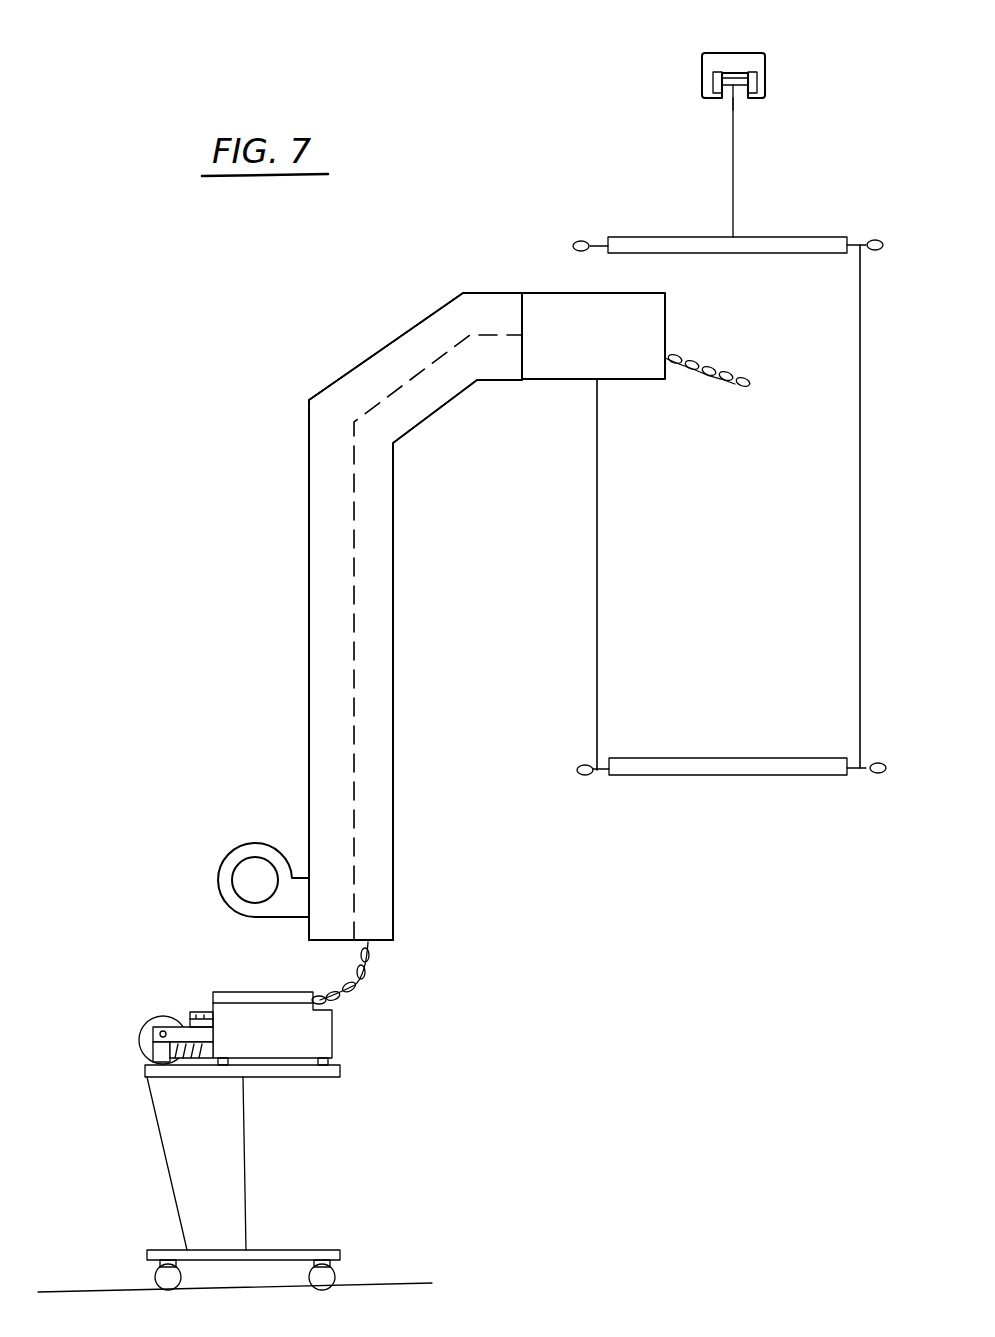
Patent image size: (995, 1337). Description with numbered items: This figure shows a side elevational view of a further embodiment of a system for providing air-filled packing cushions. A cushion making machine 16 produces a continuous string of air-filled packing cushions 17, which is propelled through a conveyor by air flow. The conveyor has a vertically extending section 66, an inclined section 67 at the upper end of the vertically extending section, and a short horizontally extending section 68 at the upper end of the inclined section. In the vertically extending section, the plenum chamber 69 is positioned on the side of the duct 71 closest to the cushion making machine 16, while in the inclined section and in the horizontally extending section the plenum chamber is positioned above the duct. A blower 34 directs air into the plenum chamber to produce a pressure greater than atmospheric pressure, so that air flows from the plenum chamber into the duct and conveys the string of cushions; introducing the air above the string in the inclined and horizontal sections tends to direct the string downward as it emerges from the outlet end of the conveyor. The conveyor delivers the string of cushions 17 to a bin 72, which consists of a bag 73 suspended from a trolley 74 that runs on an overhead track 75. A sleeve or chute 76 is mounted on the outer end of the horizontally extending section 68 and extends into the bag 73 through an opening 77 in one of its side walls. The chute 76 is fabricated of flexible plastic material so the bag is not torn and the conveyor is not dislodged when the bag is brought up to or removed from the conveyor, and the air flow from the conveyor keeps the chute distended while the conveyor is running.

The machine 16 is at (180, 992).
The string of air-filled packing cushions 17 is at (732, 373).
The blower 34 is at (250, 868).
The vertically extending section 66 is at (309, 670).
The inclined section 67 is at (360, 355).
The horizontally extending section 68 is at (500, 293).
The plenum chamber 69 is at (434, 325).
The duct 71 is at (448, 382).
The bin 72 is at (679, 240).
The bag 73 is at (833, 530).
The trolley 74 is at (733, 58).
The overhead track 75 is at (765, 62).
The chute 76 is at (637, 322).
The opening 77 is at (597, 385).